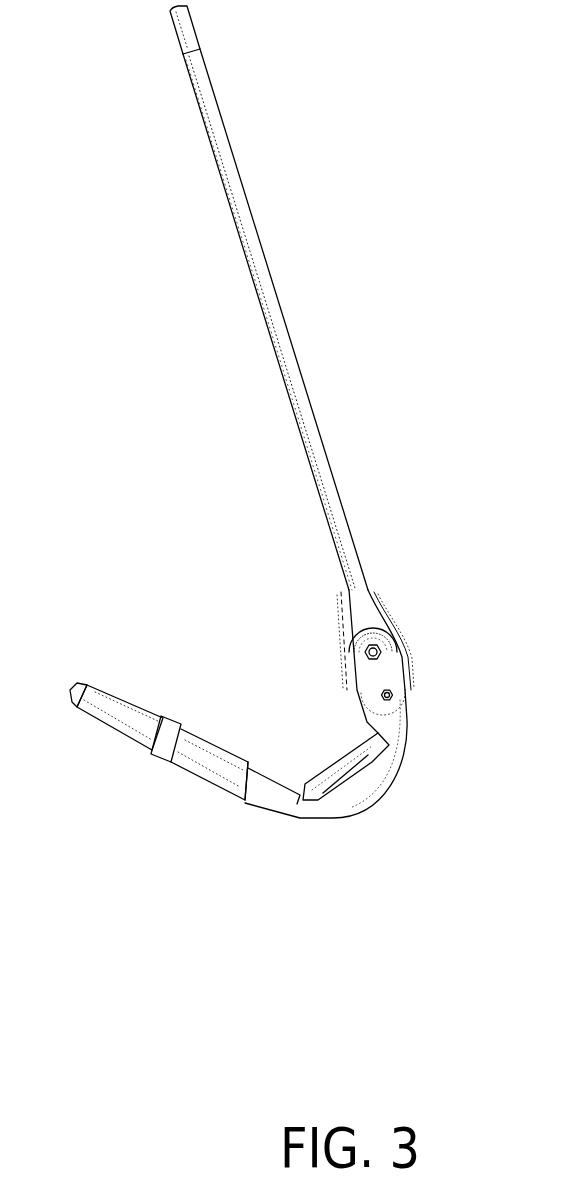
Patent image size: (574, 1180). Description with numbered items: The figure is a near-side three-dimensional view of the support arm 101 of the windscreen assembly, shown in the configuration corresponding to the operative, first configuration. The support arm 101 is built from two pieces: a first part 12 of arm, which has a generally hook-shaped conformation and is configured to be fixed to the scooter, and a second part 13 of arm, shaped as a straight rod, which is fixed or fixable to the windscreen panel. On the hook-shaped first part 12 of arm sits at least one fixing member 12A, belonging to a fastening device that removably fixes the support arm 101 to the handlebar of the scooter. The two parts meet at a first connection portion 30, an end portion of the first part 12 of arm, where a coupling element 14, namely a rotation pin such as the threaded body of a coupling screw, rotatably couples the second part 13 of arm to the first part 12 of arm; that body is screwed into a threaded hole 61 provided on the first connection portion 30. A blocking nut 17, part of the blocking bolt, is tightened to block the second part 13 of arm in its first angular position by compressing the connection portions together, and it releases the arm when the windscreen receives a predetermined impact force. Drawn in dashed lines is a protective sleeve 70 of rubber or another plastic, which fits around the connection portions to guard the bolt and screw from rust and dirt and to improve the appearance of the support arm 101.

The support arm 101 is at (229, 132).
The second part of arm 13 is at (295, 356).
The blocking nut 17 is at (383, 652).
The first connection portion 30 is at (400, 678).
The protective sleeve 70 is at (386, 609).
The threaded hole 61 is at (381, 696).
The coupling element 14 is at (395, 697).
The first part of arm 12 is at (378, 780).
The fixing member 12A is at (105, 757).